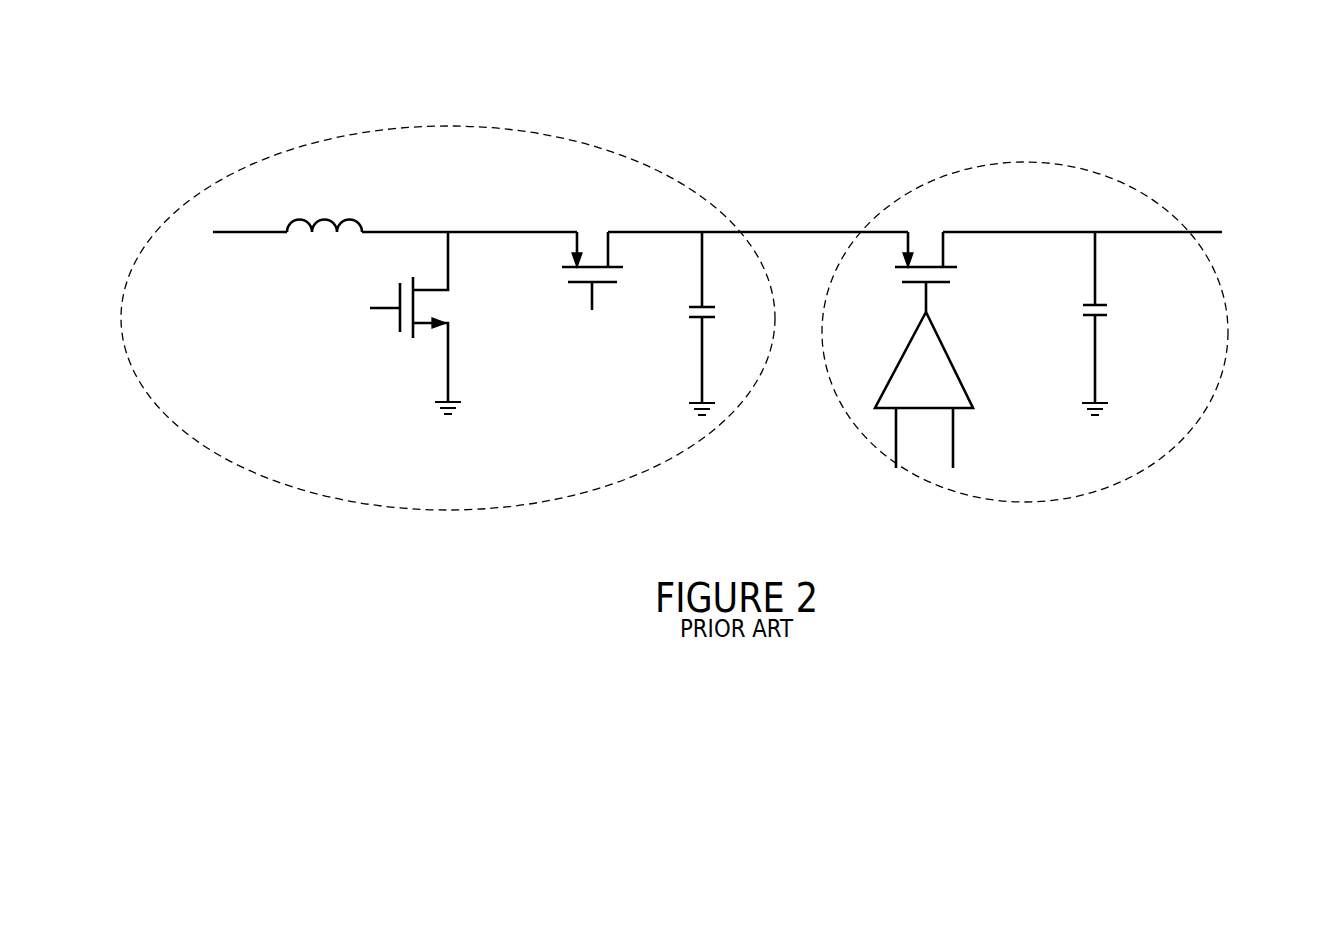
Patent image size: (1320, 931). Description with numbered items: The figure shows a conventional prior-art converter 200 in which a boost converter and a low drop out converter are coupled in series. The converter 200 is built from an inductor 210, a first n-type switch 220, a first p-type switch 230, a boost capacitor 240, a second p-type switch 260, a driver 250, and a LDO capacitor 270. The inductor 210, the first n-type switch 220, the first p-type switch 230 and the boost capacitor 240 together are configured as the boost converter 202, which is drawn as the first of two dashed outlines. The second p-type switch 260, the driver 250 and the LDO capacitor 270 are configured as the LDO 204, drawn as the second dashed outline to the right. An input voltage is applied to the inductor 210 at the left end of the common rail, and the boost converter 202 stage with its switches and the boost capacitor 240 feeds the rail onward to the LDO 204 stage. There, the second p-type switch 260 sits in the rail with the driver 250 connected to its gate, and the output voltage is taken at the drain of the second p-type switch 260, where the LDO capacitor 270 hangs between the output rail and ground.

The converter 200 is at (1202, 97).
The boost converter 202 is at (413, 508).
The LDO 204 is at (1128, 479).
The inductor 210 is at (348, 220).
The first n-type switch N1 220 is at (394, 340).
The first p-type switch P1 230 is at (558, 209).
The boost capacitor C_bst 240 is at (686, 327).
The driver 250 is at (948, 356).
The second p-type switch P2 260 is at (957, 207).
The LDO capacitor C_ldo 270 is at (1112, 327).